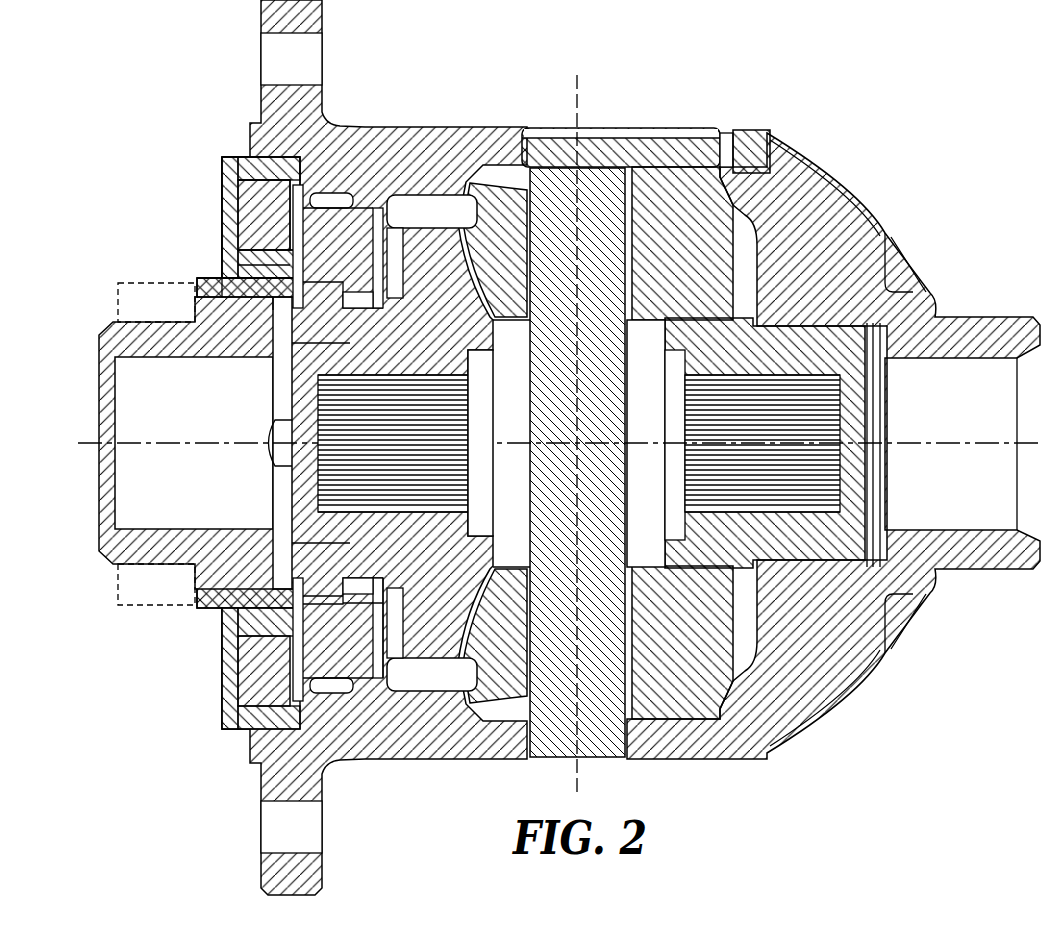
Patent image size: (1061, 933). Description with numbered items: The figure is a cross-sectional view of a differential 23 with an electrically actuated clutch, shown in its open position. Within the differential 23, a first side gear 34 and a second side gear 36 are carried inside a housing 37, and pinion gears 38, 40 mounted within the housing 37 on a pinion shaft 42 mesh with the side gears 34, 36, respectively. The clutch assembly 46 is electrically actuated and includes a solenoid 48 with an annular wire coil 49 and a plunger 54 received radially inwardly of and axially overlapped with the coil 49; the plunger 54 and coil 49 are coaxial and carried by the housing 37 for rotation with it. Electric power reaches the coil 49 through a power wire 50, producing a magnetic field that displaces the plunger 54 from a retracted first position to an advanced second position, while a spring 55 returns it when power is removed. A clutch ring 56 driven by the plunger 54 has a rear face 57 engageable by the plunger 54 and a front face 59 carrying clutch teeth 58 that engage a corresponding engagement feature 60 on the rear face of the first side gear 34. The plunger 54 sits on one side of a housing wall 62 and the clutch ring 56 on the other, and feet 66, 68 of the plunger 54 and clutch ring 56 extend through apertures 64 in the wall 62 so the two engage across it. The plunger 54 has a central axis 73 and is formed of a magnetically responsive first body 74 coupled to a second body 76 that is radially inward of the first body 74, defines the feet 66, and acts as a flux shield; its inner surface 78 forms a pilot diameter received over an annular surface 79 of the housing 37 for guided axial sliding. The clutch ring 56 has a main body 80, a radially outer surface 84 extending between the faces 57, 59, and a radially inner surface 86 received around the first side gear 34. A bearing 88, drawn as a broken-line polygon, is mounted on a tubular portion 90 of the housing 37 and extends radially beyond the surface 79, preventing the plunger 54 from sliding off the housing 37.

The differential 23 is at (817, 113).
The first side gear 34 is at (318, 530).
The second side gear 36 is at (847, 357).
The housing 37 is at (485, 127).
The pinion gear 38 is at (667, 227).
The pinion gear 40 is at (663, 667).
The pinion shaft 42 is at (600, 182).
The clutch assembly 46 is at (210, 260).
The solenoid 48 is at (215, 157).
The wire coil 49 is at (247, 197).
The power wire 50 is at (223, 208).
The plunger 54 is at (207, 277).
The spring 55 is at (388, 303).
The clutch ring 56 is at (388, 228).
The rear face 57 is at (300, 223).
The clutch teeth 58 is at (392, 230).
The front face 59 is at (413, 197).
The engagement feature 60 is at (412, 233).
The housing wall 62 is at (313, 663).
The apertures 64 is at (340, 200).
The feet 66 is at (285, 307).
The feet 68 is at (310, 220).
The central axis 73 is at (87, 443).
The first body 74 is at (223, 265).
The second body 76 is at (197, 282).
The inner surface 78 is at (250, 310).
The surface 79 is at (222, 310).
The main body 80 is at (367, 647).
The radially outer surface 84 is at (367, 647).
The radially inner surface 86 is at (370, 560).
The bearing 88 is at (147, 603).
The tubular portion 90 is at (112, 567).